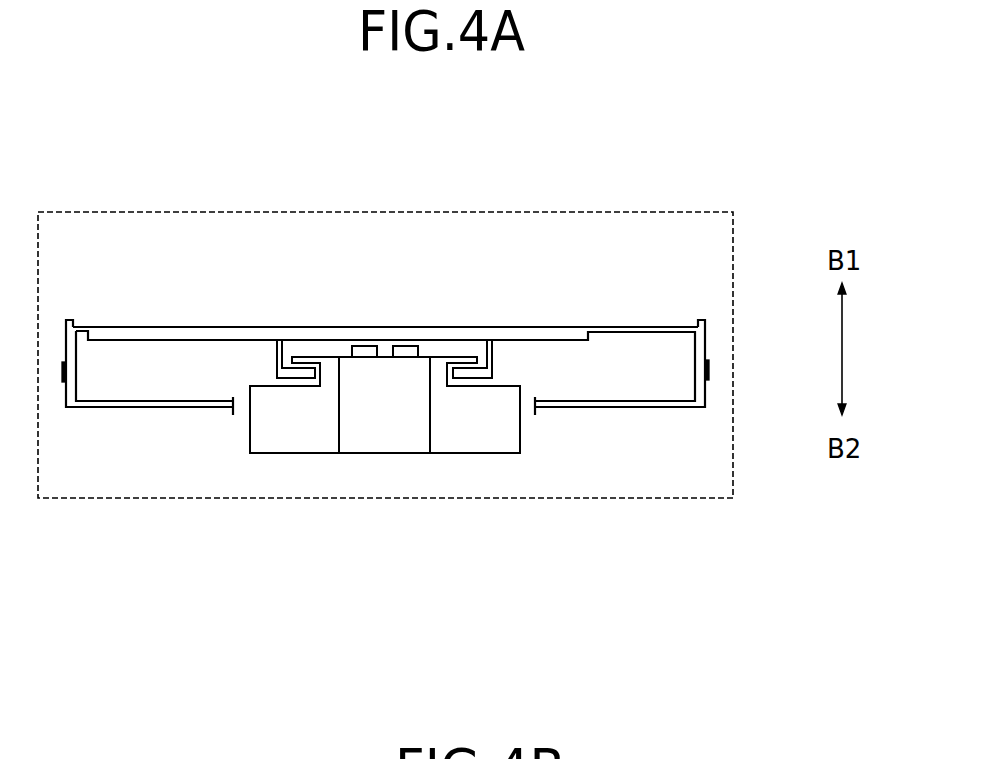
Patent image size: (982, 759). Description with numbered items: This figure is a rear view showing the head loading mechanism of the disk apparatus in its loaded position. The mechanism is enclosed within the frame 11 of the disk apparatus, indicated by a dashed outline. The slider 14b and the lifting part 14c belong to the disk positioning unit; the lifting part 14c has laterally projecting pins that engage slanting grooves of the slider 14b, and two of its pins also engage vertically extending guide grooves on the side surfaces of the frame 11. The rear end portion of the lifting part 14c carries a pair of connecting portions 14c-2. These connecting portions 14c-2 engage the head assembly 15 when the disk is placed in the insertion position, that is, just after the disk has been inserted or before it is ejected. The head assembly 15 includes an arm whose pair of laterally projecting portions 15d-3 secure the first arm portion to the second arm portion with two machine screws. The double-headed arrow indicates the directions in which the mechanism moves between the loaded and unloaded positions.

The frame 11 is at (655, 210).
The slider 14b is at (143, 408).
The lifting part 14c is at (223, 326).
The connecting portions 14c-2 is at (278, 361).
The head assembly 15 is at (477, 455).
The laterally projecting portions 15d-3 is at (443, 356).